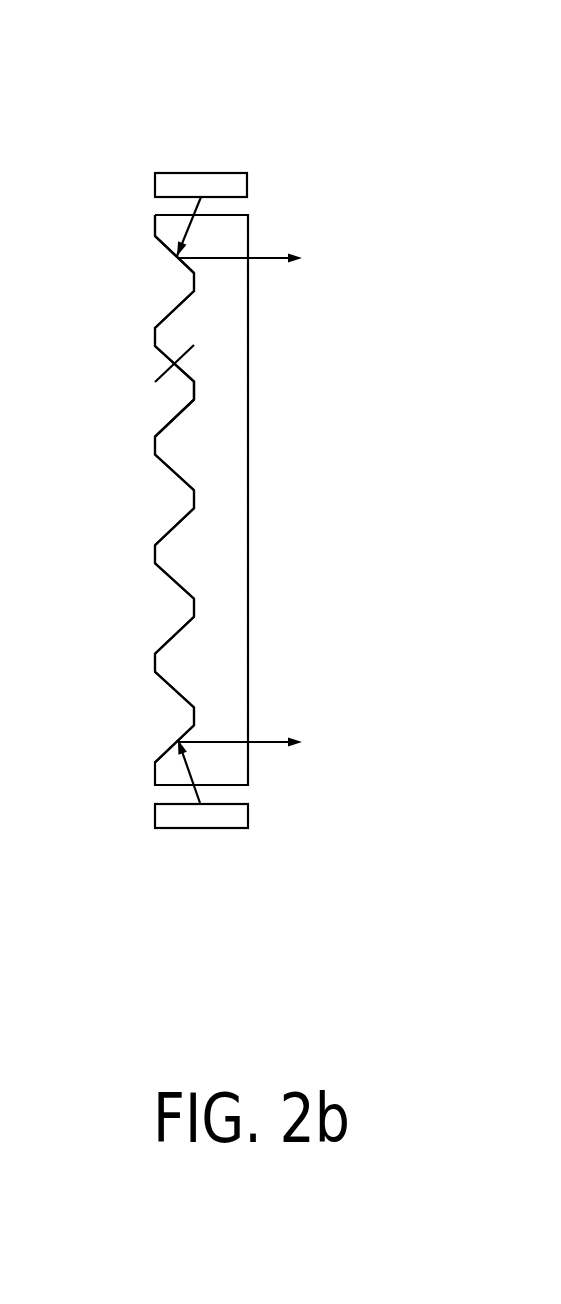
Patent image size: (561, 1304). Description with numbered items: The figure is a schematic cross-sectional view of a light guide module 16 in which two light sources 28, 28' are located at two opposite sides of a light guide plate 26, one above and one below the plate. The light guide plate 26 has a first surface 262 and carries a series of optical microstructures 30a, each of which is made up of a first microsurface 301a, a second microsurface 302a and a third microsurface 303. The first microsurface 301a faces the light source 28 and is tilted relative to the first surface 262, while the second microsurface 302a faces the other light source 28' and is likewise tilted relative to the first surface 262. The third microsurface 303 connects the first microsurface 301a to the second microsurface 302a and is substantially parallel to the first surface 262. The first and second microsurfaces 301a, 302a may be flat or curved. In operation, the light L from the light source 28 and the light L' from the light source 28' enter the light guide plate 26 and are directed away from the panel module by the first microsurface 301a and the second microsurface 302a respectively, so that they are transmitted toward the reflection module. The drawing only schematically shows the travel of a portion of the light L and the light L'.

The light guide module 16 is at (200, 853).
The light guide plate 26 is at (232, 528).
The first surface 262 is at (155, 220).
The light source 28 is at (201, 141).
The light source 28' is at (264, 821).
The optical microstructure 30a is at (148, 393).
The first microsurface 301a is at (177, 360).
The second microsurface 302a is at (177, 422).
The third microsurface 303 is at (195, 390).
The light L is at (213, 233).
The light L' is at (197, 789).